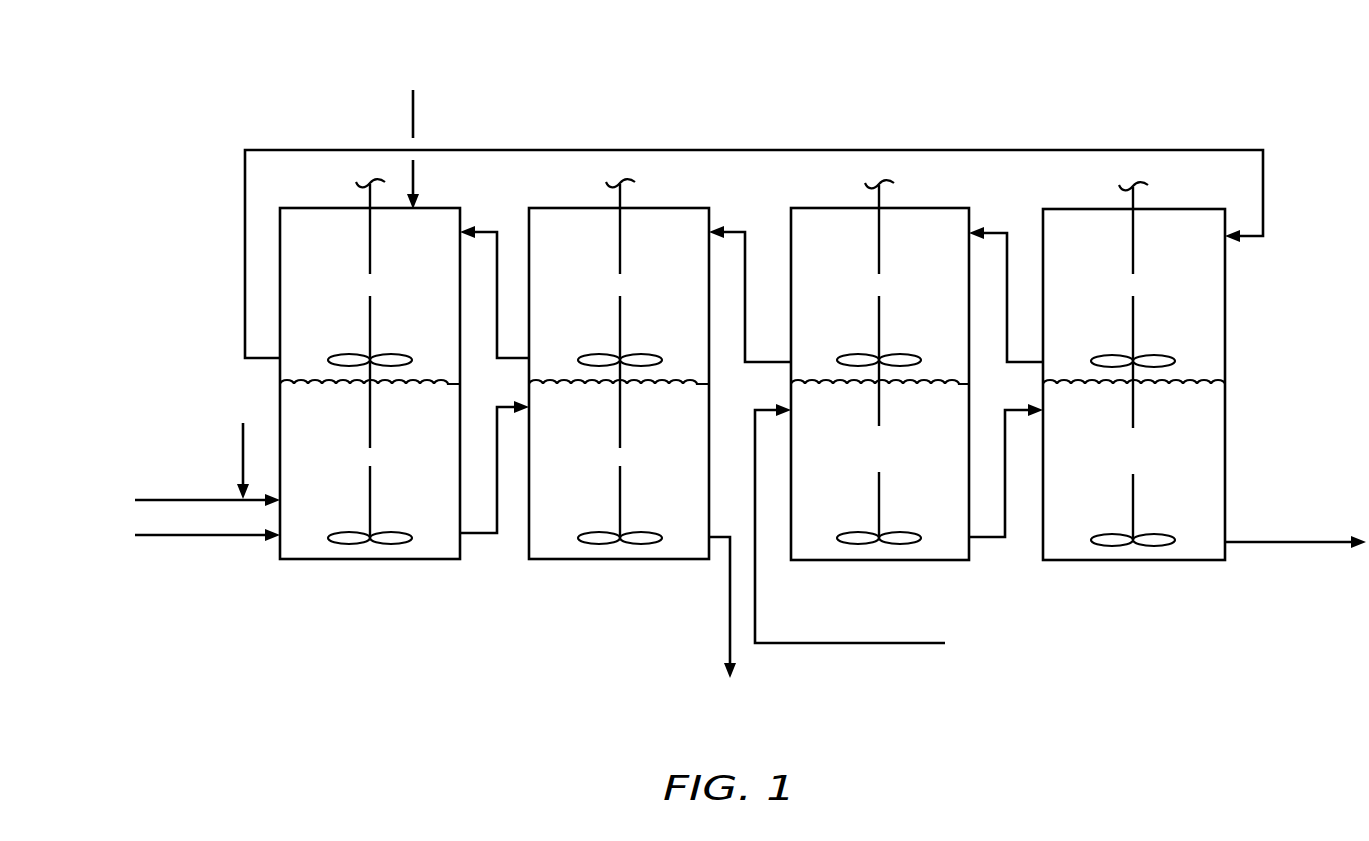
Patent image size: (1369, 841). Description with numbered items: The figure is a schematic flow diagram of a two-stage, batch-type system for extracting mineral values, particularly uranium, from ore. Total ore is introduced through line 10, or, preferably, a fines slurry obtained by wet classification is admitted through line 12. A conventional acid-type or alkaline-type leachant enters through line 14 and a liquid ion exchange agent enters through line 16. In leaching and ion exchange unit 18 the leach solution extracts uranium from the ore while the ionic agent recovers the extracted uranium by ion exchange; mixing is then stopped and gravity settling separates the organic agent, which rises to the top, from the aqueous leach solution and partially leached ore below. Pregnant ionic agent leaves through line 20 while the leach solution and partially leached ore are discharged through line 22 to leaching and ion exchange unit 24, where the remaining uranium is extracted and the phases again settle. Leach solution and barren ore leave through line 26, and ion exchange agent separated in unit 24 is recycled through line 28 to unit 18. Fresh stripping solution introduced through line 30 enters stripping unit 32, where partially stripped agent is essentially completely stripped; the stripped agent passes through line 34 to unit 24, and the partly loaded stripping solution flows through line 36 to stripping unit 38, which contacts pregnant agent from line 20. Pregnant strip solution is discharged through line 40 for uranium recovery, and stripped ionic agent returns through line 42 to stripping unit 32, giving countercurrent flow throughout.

The line 10 is at (224, 497).
The line 12 is at (242, 437).
The line 14 is at (171, 537).
The line 16 is at (414, 112).
The leaching and ion exchange unit 18 is at (279, 380).
The line 20 is at (245, 240).
The line 22 is at (481, 536).
The leaching and ion exchange unit 24 is at (529, 375).
The line 26 is at (726, 537).
The line 28 is at (491, 232).
The line 30 is at (898, 644).
The stripping unit 32 is at (791, 378).
The line 34 is at (769, 362).
The line 36 is at (1000, 538).
The stripping unit 38 is at (1041, 377).
The line 40 is at (1336, 542).
The line 42 is at (1000, 233).